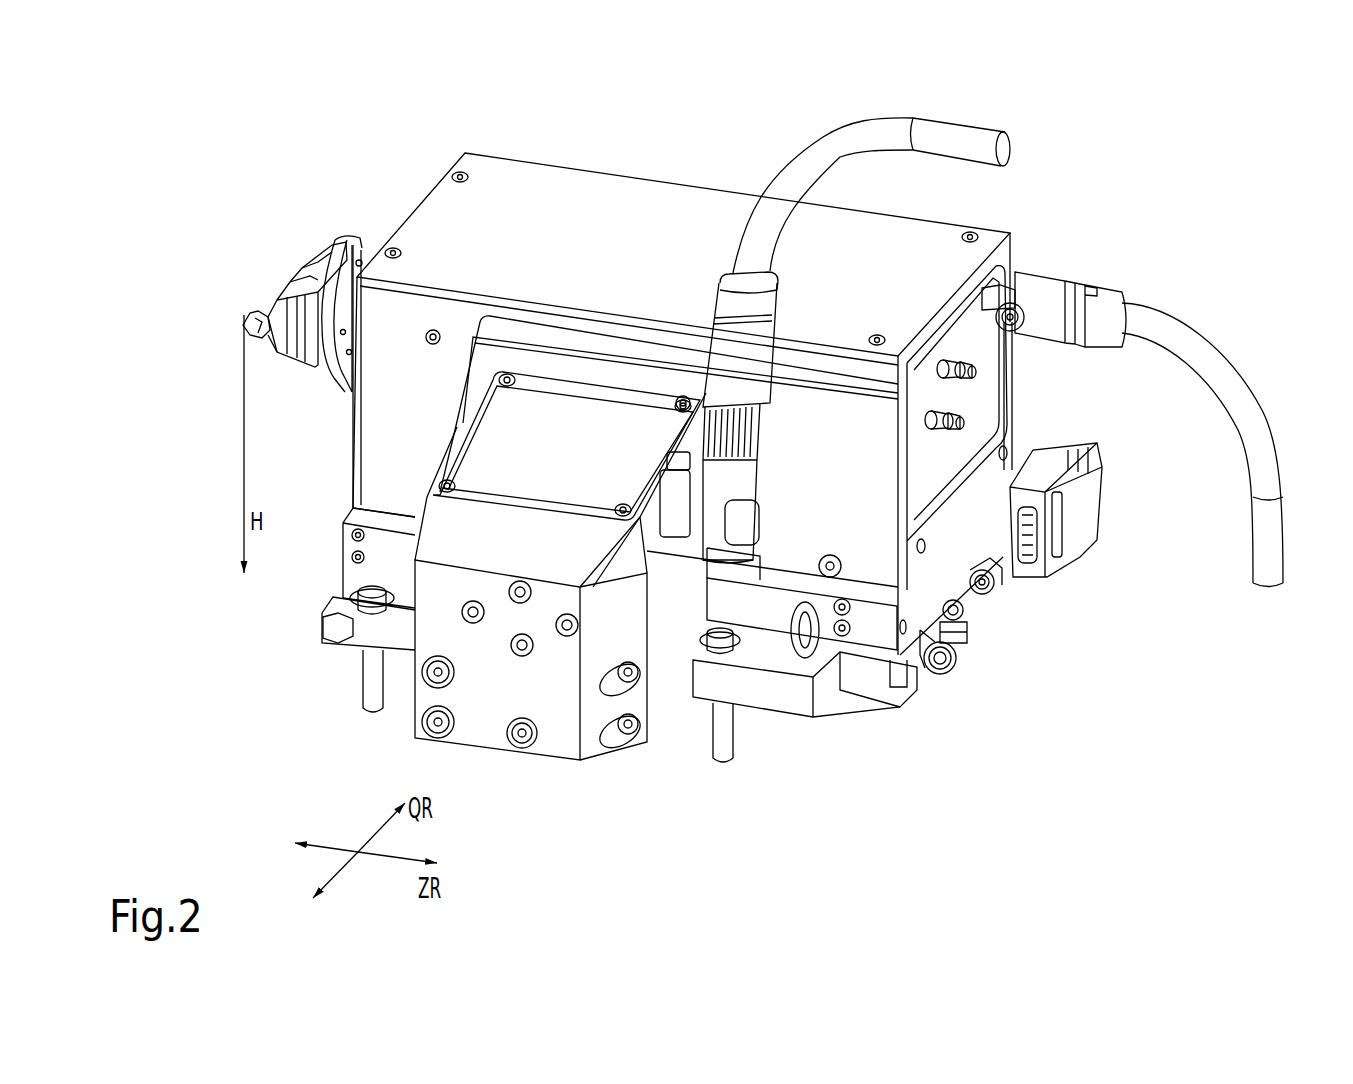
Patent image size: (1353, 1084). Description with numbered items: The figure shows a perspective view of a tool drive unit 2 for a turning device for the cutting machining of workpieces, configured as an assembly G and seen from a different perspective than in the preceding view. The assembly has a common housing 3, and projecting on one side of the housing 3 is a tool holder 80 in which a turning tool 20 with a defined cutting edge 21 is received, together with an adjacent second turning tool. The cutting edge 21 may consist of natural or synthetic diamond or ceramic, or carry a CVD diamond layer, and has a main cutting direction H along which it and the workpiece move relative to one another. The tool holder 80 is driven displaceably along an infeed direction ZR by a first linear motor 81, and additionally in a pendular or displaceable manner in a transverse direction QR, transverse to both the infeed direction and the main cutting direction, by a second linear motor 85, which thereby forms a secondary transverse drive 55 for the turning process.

The tool drive unit 2 is at (214, 95).
The housing 3 is at (600, 230).
The turning tool 20 is at (246, 308).
The cutting edge 21 is at (256, 324).
The secondary transverse drive 55 is at (540, 682).
The tool holder 80 is at (363, 228).
The first linear motor 81 is at (1193, 359).
The second linear motor 85 is at (497, 660).